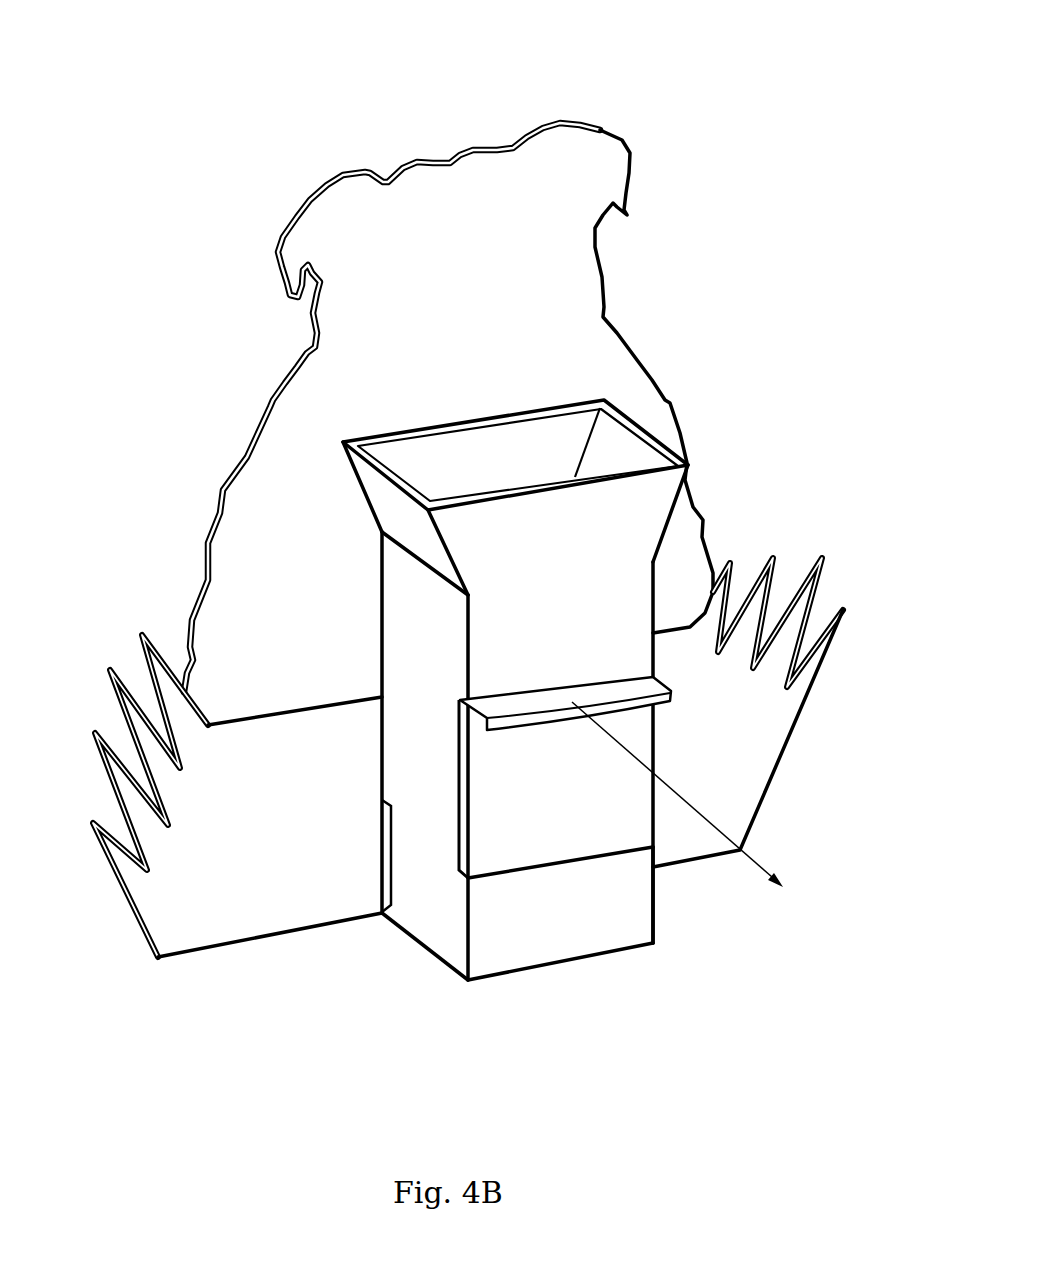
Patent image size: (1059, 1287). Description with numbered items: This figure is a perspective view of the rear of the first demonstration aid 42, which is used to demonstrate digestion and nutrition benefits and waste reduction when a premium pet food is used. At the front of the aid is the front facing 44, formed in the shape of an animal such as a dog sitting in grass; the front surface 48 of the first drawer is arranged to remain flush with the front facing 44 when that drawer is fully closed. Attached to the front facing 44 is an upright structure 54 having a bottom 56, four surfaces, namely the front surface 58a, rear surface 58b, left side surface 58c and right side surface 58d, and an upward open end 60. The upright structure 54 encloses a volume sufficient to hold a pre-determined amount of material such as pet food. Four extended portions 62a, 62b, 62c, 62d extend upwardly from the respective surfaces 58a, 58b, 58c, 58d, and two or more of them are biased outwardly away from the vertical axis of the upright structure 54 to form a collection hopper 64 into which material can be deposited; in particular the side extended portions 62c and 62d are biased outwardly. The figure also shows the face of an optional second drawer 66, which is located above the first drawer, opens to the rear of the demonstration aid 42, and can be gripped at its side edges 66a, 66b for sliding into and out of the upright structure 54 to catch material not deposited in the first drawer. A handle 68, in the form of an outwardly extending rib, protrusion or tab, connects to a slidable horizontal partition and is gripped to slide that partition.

The first demonstration aid 42 is at (660, 72).
The front facing 44 is at (308, 198).
The front surface 48 is at (382, 850).
The upright structure 54 is at (476, 646).
The bottom 56 is at (588, 960).
The front surface 58a is at (382, 668).
The rear surface 58b is at (635, 918).
The left side surface 58c is at (658, 577).
The right side surface 58d is at (455, 953).
The upward open end 60 is at (530, 590).
The extended portion 62a is at (577, 417).
The extended portion 62b is at (653, 513).
The side extended portion 62c is at (630, 442).
The side extended portion 62d is at (400, 525).
The collection hopper 64 is at (521, 442).
The second drawer 66 is at (505, 855).
The side edge 66a is at (463, 808).
The side edge 66b is at (657, 737).
The handle 68 is at (622, 693).